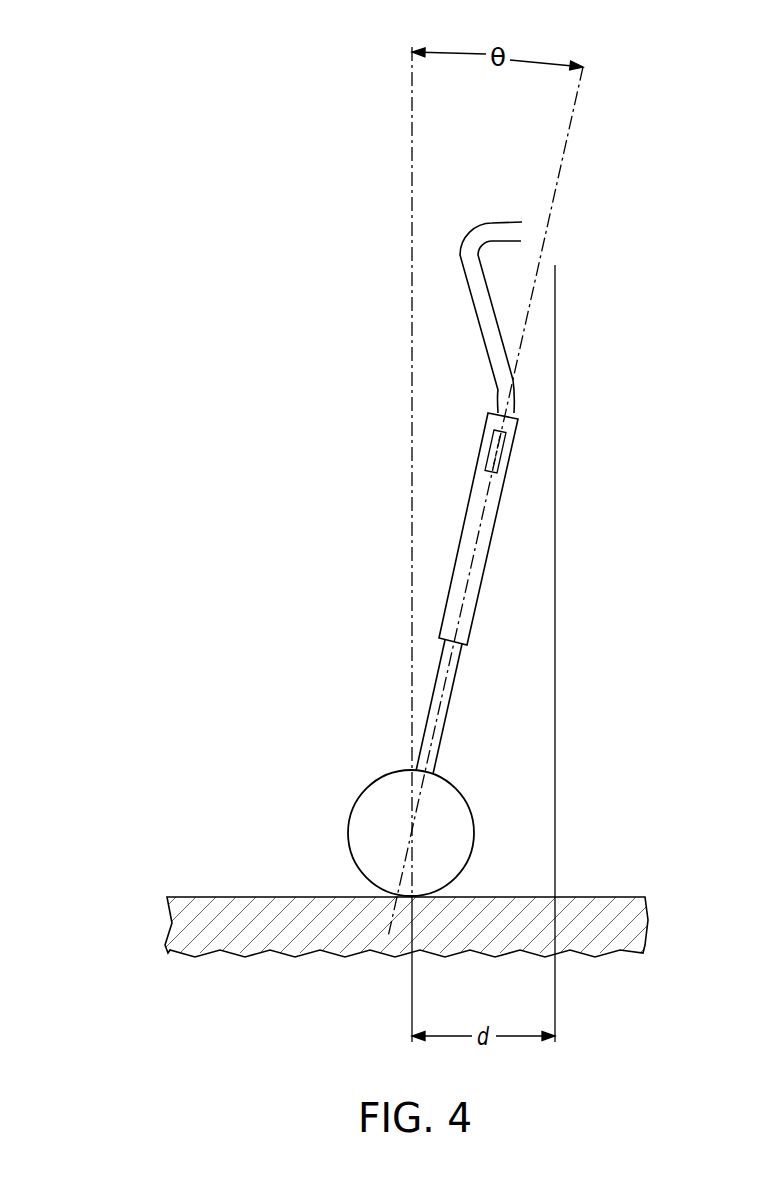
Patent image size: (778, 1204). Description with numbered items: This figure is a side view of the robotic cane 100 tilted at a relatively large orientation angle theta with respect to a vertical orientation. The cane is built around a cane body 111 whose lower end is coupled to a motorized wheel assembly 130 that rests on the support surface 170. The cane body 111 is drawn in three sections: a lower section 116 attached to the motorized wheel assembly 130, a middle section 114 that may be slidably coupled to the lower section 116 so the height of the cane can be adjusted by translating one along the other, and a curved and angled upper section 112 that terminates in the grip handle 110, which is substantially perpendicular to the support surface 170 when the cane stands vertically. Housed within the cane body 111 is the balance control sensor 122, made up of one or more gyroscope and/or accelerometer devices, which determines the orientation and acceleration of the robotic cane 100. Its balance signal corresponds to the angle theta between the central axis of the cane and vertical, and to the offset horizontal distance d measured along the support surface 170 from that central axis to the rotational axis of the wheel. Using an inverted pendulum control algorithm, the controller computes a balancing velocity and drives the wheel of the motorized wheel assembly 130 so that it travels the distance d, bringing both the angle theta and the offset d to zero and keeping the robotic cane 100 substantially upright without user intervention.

The robotic cane 100 is at (153, 75).
The grip handle 110 is at (594, 221).
The cane body 111 is at (437, 522).
The upper section 112 is at (468, 316).
The middle section 114 is at (482, 595).
The lower section 116 is at (455, 693).
The balance control sensor 122 is at (489, 441).
The motorized wheel assembly 130 is at (348, 785).
The support surface 170 is at (608, 897).